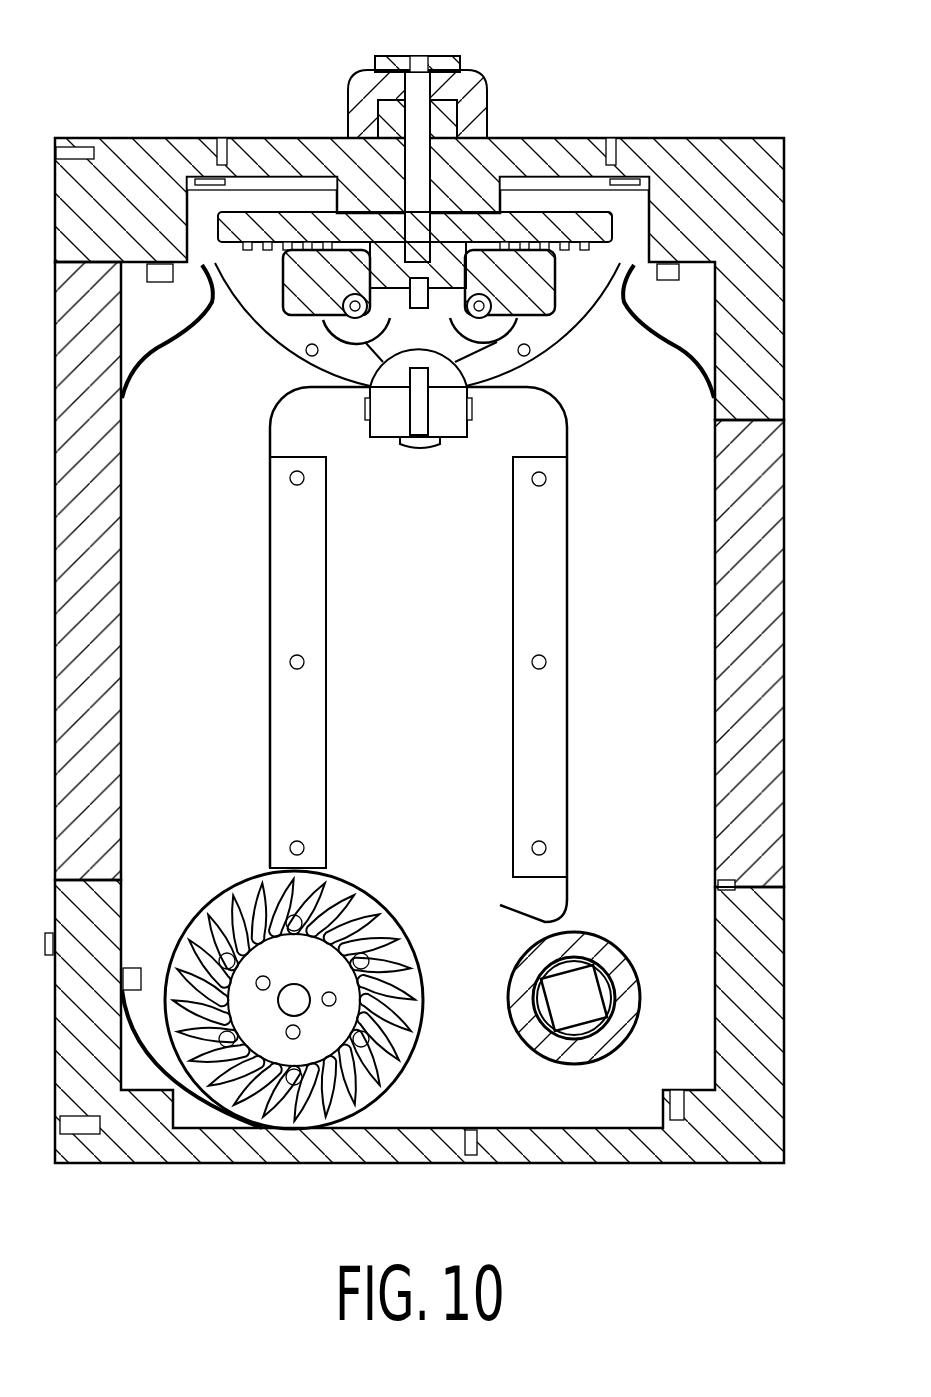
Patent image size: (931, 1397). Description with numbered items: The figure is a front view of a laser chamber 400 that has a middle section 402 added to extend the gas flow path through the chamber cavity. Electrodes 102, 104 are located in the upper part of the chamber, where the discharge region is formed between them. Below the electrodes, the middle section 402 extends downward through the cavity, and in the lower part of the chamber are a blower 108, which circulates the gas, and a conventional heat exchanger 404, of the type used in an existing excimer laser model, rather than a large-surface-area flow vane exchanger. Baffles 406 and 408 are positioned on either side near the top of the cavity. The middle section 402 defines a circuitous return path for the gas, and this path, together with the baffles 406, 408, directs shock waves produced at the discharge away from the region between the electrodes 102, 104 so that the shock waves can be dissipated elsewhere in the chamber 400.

The laser chamber 400 is at (703, 105).
The electrode 102 is at (634, 303).
The electrode 104 is at (470, 375).
The baffle 406 is at (160, 355).
The baffle 408 is at (680, 325).
The middle section 402 is at (568, 632).
The conventional heat exchanger 404 is at (600, 928).
The blower 108 is at (392, 1088).